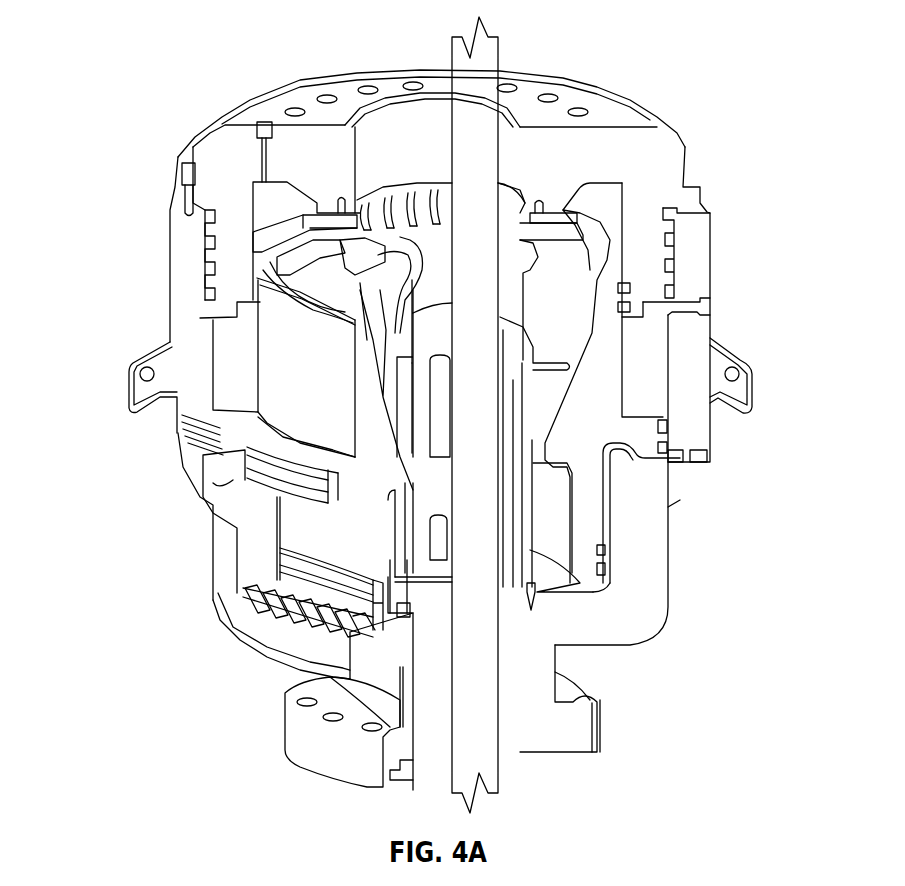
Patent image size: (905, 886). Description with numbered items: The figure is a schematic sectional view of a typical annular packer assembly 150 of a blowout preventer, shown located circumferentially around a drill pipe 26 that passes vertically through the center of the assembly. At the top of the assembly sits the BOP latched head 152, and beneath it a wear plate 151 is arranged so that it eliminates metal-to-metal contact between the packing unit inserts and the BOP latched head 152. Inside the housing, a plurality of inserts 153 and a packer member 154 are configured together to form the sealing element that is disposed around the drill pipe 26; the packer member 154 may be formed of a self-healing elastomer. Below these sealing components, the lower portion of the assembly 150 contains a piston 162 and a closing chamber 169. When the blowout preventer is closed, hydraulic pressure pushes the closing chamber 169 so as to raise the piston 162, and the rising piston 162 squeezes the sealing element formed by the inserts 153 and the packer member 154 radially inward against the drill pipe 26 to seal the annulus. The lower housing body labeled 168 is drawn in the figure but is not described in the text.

The annular packer assembly 150 is at (132, 22).
The drill pipe 26 is at (485, 763).
The wear plate 151 is at (548, 203).
The BOP latched head 152 is at (647, 145).
The inserts 153 is at (357, 268).
The packer member 154 is at (620, 287).
The piston 162 is at (633, 423).
The lower housing 168 is at (208, 492).
The closing chamber 169 is at (650, 462).